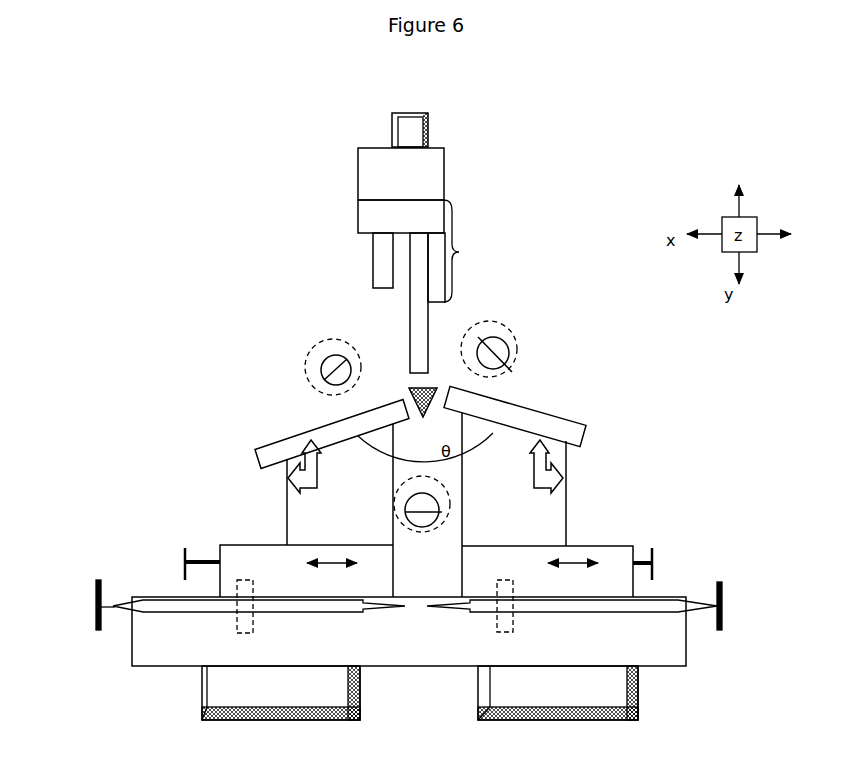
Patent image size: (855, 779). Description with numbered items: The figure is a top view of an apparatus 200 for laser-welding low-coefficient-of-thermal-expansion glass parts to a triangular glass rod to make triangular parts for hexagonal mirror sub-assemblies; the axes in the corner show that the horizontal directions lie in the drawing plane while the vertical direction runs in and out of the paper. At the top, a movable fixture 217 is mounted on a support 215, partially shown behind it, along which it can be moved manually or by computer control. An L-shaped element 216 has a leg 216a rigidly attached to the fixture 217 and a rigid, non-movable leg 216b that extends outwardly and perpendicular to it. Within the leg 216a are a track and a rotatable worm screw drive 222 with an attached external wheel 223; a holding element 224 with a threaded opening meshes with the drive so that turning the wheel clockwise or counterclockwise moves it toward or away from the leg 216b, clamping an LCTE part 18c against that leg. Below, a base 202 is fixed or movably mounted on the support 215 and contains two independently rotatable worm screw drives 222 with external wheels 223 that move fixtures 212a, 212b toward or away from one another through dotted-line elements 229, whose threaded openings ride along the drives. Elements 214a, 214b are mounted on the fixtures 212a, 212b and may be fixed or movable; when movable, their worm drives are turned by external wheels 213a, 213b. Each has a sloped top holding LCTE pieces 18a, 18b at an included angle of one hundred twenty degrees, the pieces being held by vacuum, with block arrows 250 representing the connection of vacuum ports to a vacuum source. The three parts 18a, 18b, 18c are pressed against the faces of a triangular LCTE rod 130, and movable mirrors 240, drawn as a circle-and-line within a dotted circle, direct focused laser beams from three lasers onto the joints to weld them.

The apparatus 200 is at (233, 190).
The support 215 is at (431, 133).
The movable fixture 217 is at (401, 174).
The L-shaped element 216 is at (459, 252).
The leg 216a is at (392, 217).
The leg 216b is at (445, 268).
The holding element 224 is at (373, 268).
The LCTE part 18c is at (410, 322).
The LCTE rod 130 is at (428, 386).
The mirrors 240 is at (522, 338).
The LCTE piece 18b is at (305, 440).
The LCTE piece 18a is at (547, 425).
The block arrows 250 is at (288, 478).
The element 214a is at (323, 502).
The element 214b is at (529, 493).
The external wheel 213a is at (183, 562).
The external wheel 213b is at (654, 560).
The movable fixture 212a is at (255, 596).
The movable fixture 212b is at (497, 596).
The worm screw drive 222 is at (220, 612).
The external wheel 223 is at (96, 598).
The elements 229 is at (253, 612).
The base 202 is at (512, 616).